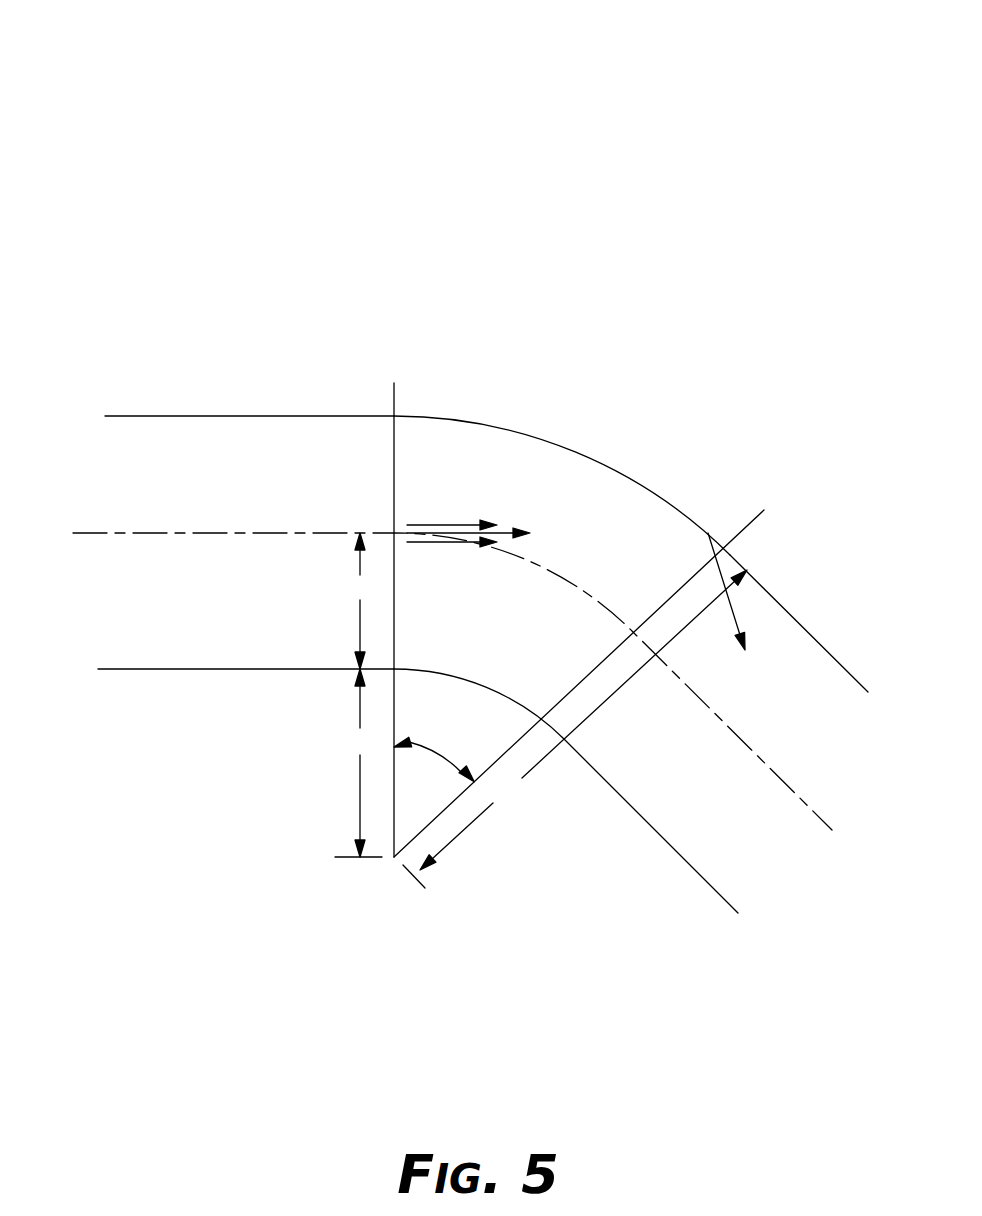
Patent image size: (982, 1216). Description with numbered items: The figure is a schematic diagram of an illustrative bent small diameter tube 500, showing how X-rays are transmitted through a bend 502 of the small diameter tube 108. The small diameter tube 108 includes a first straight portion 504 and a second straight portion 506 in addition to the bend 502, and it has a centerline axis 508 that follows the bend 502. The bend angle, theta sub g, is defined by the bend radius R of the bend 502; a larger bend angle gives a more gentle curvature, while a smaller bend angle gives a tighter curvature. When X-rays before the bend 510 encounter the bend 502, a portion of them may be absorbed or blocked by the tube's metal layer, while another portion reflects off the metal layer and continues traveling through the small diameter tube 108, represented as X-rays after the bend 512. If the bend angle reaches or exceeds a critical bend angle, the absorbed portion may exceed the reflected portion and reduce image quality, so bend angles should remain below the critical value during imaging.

The bent small diameter tube 500 is at (702, 67).
The small diameter tube 108 is at (283, 416).
The first straight portion 504 is at (303, 350).
The bend 502 is at (636, 437).
The second straight portion 506 is at (787, 595).
The centerline axis 508 is at (214, 533).
The X-rays before the bend 510 is at (503, 507).
The X-rays after the bend 512 is at (723, 643).